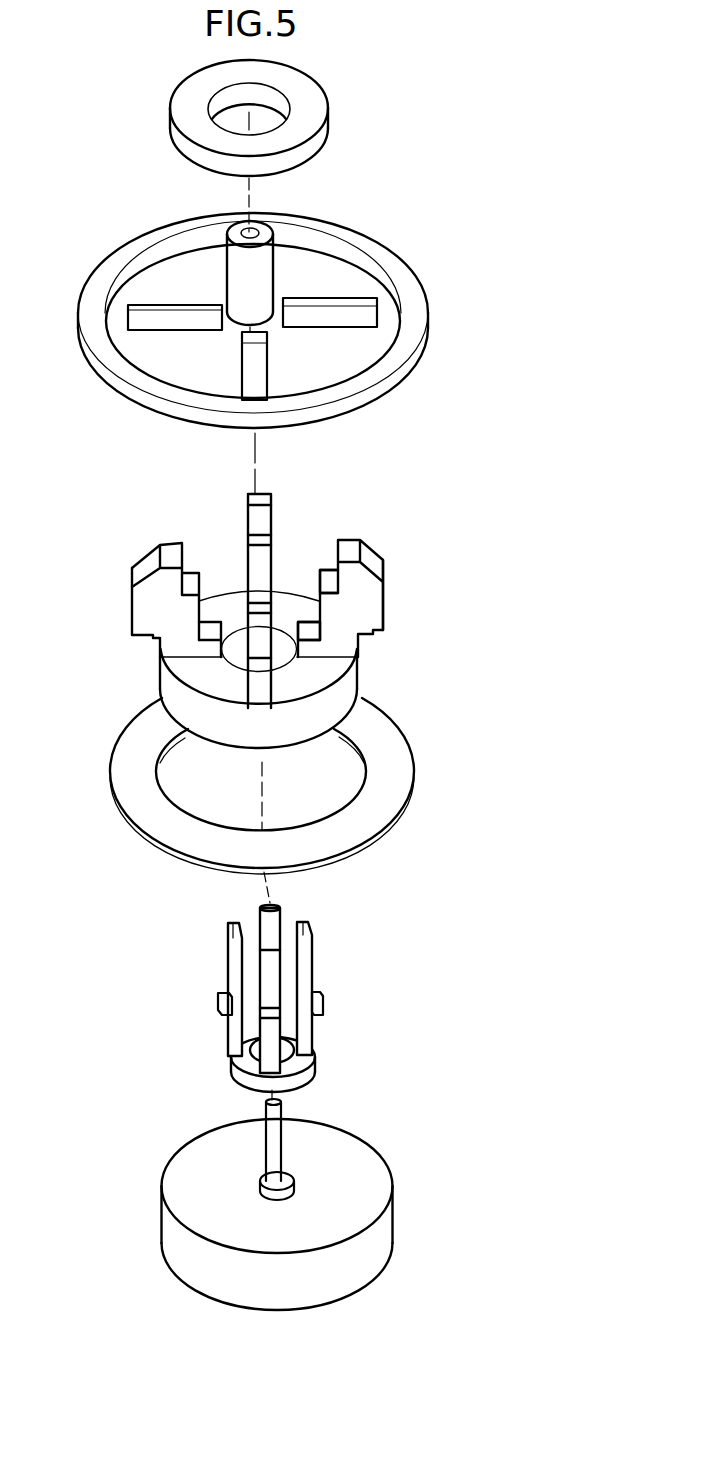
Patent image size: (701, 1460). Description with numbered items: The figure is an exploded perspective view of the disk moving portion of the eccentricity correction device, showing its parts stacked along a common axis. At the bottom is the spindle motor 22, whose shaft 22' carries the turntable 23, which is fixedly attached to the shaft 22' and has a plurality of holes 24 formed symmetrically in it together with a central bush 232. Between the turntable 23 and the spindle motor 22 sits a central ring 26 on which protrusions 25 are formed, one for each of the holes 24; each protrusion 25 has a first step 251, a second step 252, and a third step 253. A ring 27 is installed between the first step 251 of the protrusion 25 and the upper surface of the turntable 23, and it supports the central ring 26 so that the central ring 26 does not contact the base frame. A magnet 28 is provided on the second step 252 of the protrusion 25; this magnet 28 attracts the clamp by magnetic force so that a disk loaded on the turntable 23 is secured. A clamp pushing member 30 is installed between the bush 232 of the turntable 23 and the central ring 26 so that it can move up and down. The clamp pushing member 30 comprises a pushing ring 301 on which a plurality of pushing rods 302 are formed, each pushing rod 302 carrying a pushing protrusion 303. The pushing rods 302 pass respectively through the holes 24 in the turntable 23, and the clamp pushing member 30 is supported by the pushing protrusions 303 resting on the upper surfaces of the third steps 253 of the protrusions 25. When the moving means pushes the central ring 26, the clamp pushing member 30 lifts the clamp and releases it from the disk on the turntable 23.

The magnet 28 is at (318, 123).
The turntable 23 is at (279, 353).
The bush 232 is at (270, 275).
The holes 24 is at (353, 312).
The protrusions 25 is at (314, 601).
The second step 252 is at (325, 580).
The first step 251 is at (376, 632).
The third step 253 is at (313, 632).
The central ring 26 is at (165, 697).
The ring 27 is at (143, 814).
The clamp pushing member 30 is at (265, 997).
The pushing ring 301 is at (307, 1075).
The pushing rods 302 is at (272, 895).
The pushing protrusions 303 is at (322, 1000).
The spindle motor 22 is at (250, 1214).
The shaft 22' is at (216, 1149).